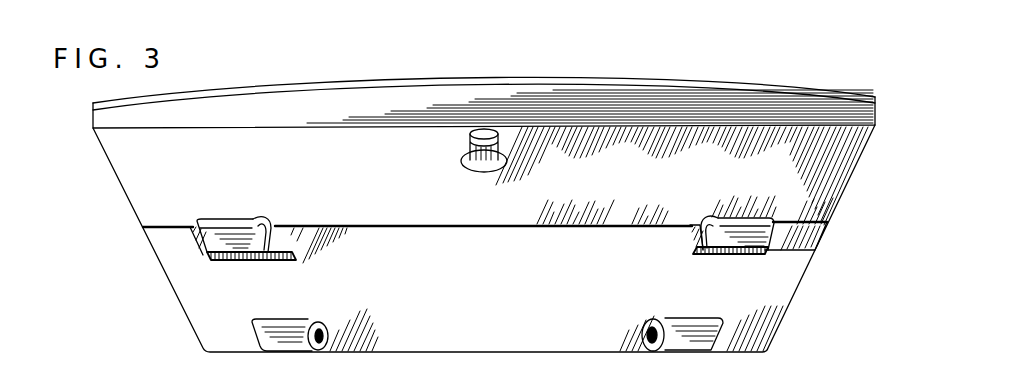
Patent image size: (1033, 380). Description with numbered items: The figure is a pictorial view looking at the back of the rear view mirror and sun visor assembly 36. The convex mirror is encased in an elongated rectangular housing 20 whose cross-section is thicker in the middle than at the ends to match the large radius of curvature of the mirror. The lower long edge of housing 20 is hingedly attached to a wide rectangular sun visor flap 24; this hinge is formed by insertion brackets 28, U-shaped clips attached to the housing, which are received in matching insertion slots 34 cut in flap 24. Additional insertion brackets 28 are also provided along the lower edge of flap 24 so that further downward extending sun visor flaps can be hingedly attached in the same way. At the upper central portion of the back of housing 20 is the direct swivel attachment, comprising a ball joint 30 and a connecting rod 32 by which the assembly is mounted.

The housing 20 is at (317, 102).
The sun visor flap 24 is at (440, 323).
The insertion brackets 28 is at (223, 245).
The ball joint 30 is at (467, 155).
The connecting rod 32 is at (501, 143).
The insertion slots 34 is at (200, 247).
The rear view mirror and sun visor assembly 36 is at (812, 78).